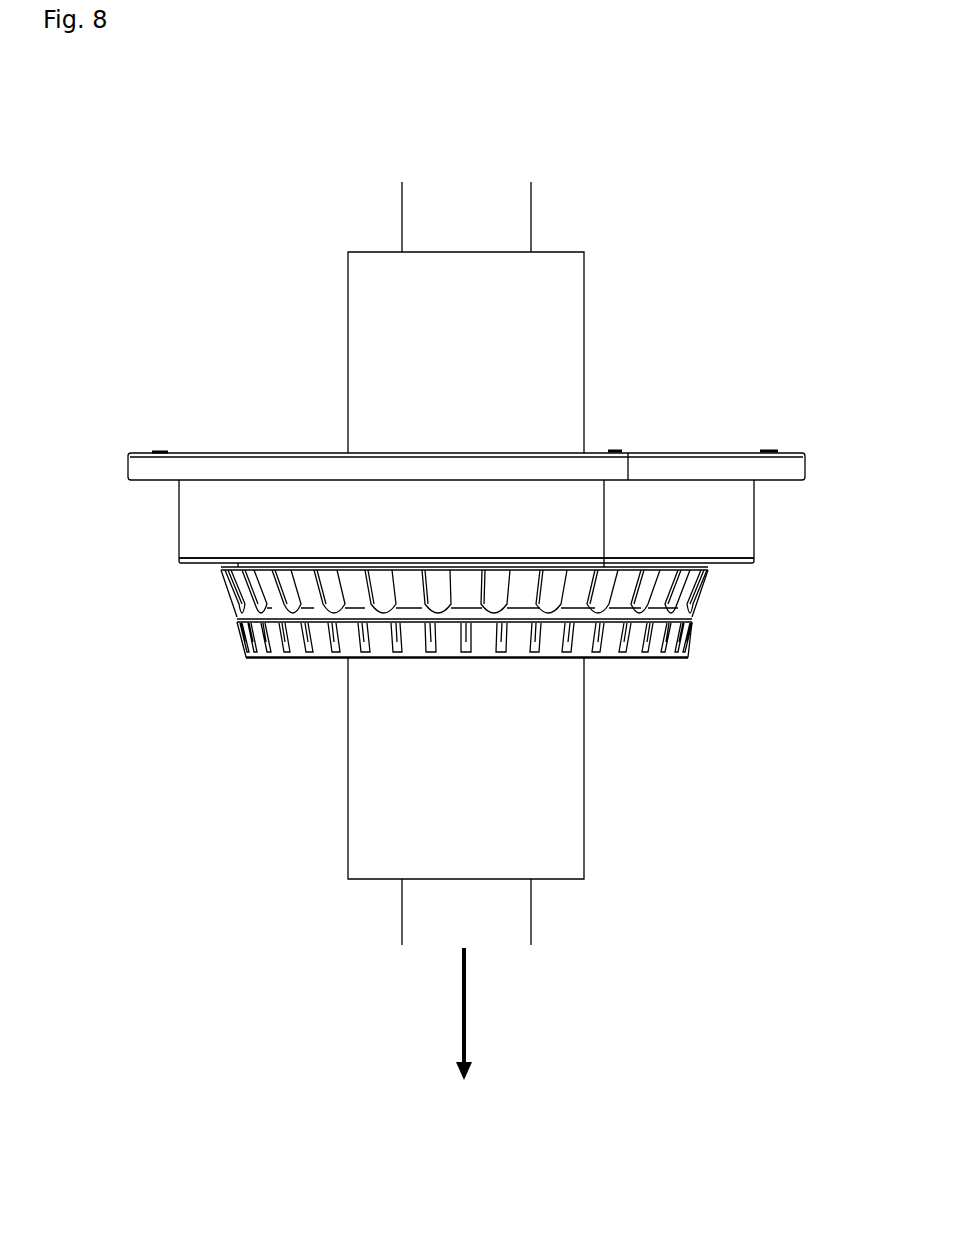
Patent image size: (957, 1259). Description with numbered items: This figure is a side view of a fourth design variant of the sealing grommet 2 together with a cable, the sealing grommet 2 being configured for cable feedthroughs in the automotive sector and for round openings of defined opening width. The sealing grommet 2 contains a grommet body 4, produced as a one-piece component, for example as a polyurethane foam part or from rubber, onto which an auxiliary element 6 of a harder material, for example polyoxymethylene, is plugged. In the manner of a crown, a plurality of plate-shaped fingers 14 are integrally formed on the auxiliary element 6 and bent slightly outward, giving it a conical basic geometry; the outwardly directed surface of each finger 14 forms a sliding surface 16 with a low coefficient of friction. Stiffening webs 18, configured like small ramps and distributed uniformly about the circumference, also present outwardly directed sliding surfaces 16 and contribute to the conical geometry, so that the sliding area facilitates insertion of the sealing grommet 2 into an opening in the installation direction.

The sealing grommet 2 is at (708, 203).
The grommet body 4 is at (238, 503).
The auxiliary element 6 is at (298, 645).
The fingers 14 is at (637, 592).
The sliding surface 16 is at (531, 705).
The stiffening webs 18 is at (460, 645).